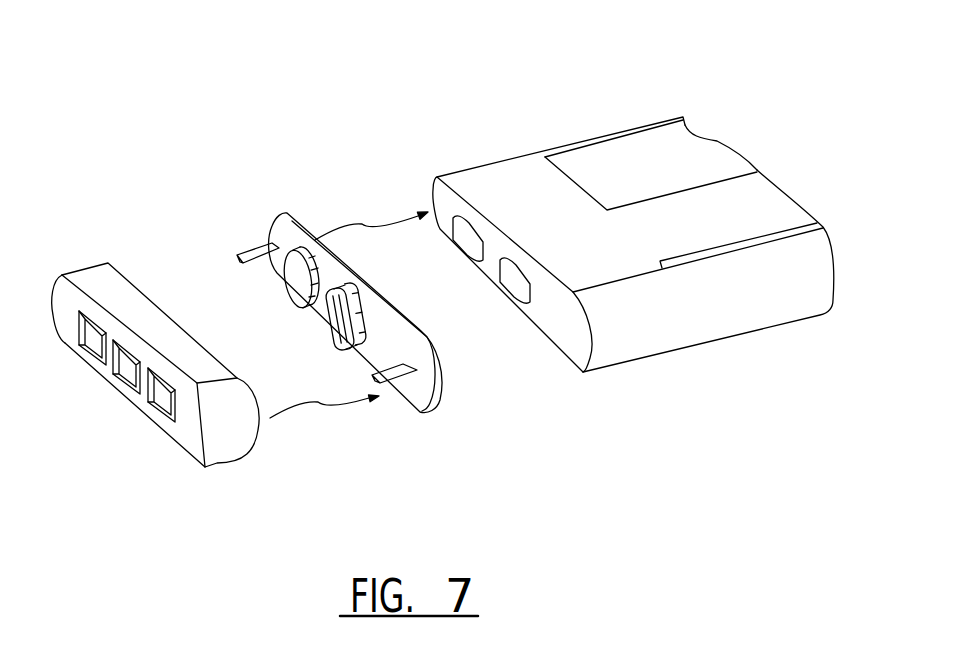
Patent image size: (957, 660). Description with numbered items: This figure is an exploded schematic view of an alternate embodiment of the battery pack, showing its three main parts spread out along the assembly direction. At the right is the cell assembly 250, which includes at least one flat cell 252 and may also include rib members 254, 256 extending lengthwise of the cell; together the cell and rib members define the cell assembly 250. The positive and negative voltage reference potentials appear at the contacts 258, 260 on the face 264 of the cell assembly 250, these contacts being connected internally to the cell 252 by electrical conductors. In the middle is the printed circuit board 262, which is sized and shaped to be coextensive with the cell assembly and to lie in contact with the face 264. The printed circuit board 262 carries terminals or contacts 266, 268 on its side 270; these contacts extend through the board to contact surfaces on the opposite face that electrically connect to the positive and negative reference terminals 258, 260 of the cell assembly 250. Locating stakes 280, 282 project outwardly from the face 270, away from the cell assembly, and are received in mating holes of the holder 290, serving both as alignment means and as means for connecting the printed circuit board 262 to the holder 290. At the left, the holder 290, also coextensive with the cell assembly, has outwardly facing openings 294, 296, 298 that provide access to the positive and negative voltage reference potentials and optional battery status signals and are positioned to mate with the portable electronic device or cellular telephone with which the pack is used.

The cell assembly 250 is at (623, 219).
The flat cell 252 is at (651, 153).
The rib member 254 is at (492, 160).
The rib member 256 is at (668, 338).
The positive voltage reference contact 258 is at (468, 238).
The negative voltage reference contact 260 is at (515, 280).
The printed circuit board 262 is at (339, 323).
The face of the cell assembly 264 is at (576, 332).
The terminal or contact 266 is at (320, 348).
The terminal or contact 268 is at (263, 297).
The side of the printed circuit board 270 is at (418, 364).
The locating stake 280 is at (405, 384).
The locating stake 282 is at (247, 248).
The holder 290 is at (187, 397).
The opening 294 is at (95, 340).
The opening 296 is at (133, 367).
The opening 298 is at (167, 403).